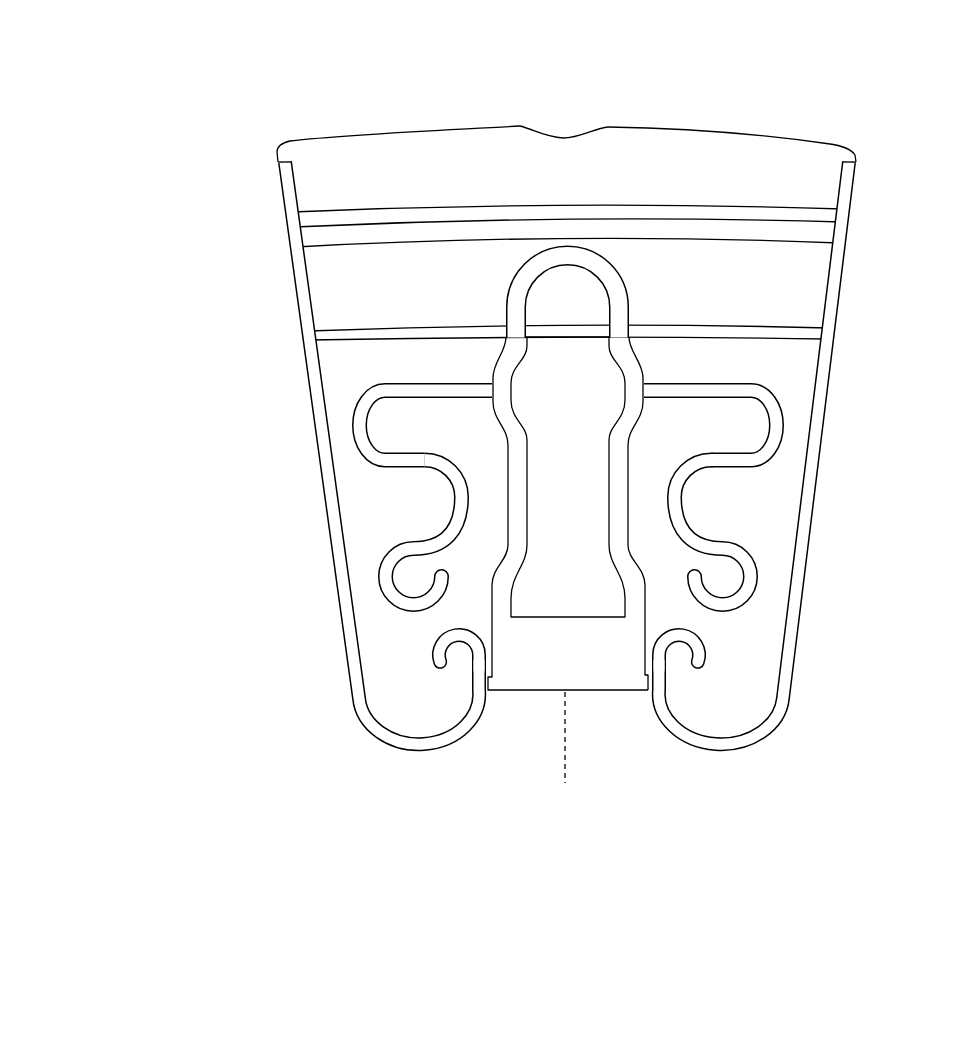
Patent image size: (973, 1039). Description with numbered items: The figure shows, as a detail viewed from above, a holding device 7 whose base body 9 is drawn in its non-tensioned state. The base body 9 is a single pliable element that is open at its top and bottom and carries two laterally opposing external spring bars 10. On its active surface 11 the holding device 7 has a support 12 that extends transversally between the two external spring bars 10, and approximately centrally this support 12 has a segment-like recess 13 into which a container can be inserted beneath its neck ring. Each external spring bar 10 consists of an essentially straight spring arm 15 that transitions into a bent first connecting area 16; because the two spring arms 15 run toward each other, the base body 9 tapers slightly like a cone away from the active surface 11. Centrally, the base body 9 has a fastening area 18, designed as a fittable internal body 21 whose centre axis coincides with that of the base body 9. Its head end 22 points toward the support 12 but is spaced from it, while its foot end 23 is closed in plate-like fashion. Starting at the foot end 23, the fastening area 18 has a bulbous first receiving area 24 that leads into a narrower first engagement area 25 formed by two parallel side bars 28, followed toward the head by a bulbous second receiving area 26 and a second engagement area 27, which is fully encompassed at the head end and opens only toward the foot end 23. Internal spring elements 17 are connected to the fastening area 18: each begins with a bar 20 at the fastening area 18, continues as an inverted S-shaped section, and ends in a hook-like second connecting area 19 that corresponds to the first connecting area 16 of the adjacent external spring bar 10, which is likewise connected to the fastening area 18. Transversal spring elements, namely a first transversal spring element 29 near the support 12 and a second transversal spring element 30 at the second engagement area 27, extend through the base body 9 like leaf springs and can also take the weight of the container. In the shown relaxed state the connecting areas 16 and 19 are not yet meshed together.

The holding device 7 is at (220, 676).
The base body 9 is at (204, 536).
The external spring bars 10 is at (312, 357).
The active surface 11 is at (790, 110).
The support 12 is at (826, 188).
The segment-like recess 13 is at (573, 95).
The spring arm 15 is at (320, 470).
The first connecting area 16 is at (467, 720).
The internal spring elements 17 is at (438, 491).
The fastening area 18 is at (638, 352).
The second connecting area 19 is at (380, 589).
The bar 20 is at (426, 410).
The internal body 21 is at (632, 424).
The head end 22 is at (631, 261).
The foot end 23 is at (660, 672).
The first receiving area 24 is at (568, 581).
The first engagement area 25 is at (568, 494).
The second receiving area 26 is at (568, 388).
The second engagement area 27 is at (567, 312).
The side bars 28 is at (617, 470).
The first transversal spring element 29 is at (304, 236).
The second transversal spring element 30 is at (413, 328).